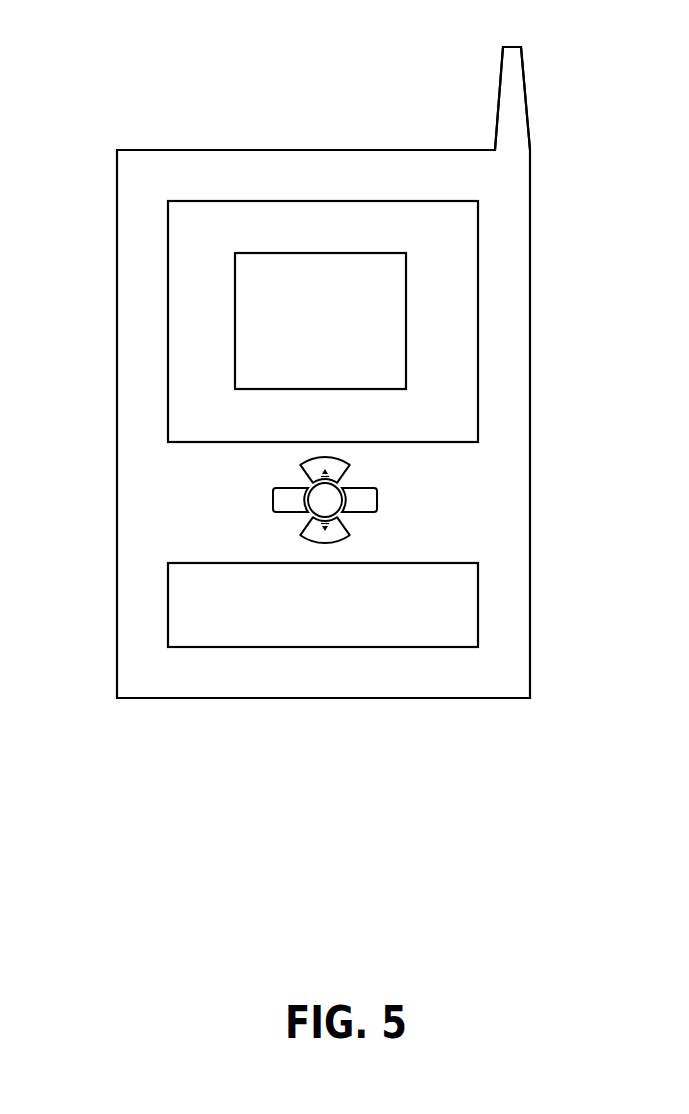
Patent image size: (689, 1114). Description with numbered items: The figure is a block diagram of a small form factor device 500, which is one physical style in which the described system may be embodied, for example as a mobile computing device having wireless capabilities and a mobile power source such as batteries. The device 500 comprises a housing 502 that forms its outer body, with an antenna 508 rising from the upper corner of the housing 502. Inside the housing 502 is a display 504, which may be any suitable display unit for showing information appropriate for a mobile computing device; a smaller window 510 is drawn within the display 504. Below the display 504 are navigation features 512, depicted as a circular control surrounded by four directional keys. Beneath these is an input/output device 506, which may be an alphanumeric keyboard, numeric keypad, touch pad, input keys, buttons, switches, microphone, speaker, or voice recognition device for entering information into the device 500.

The small form factor device 500 is at (124, 54).
The housing 502 is at (530, 423).
The display 504 is at (478, 218).
The input/output (I/O) device 506 is at (478, 595).
The antenna 508 is at (499, 92).
The display window 510 is at (406, 338).
The navigation features 512 is at (410, 493).